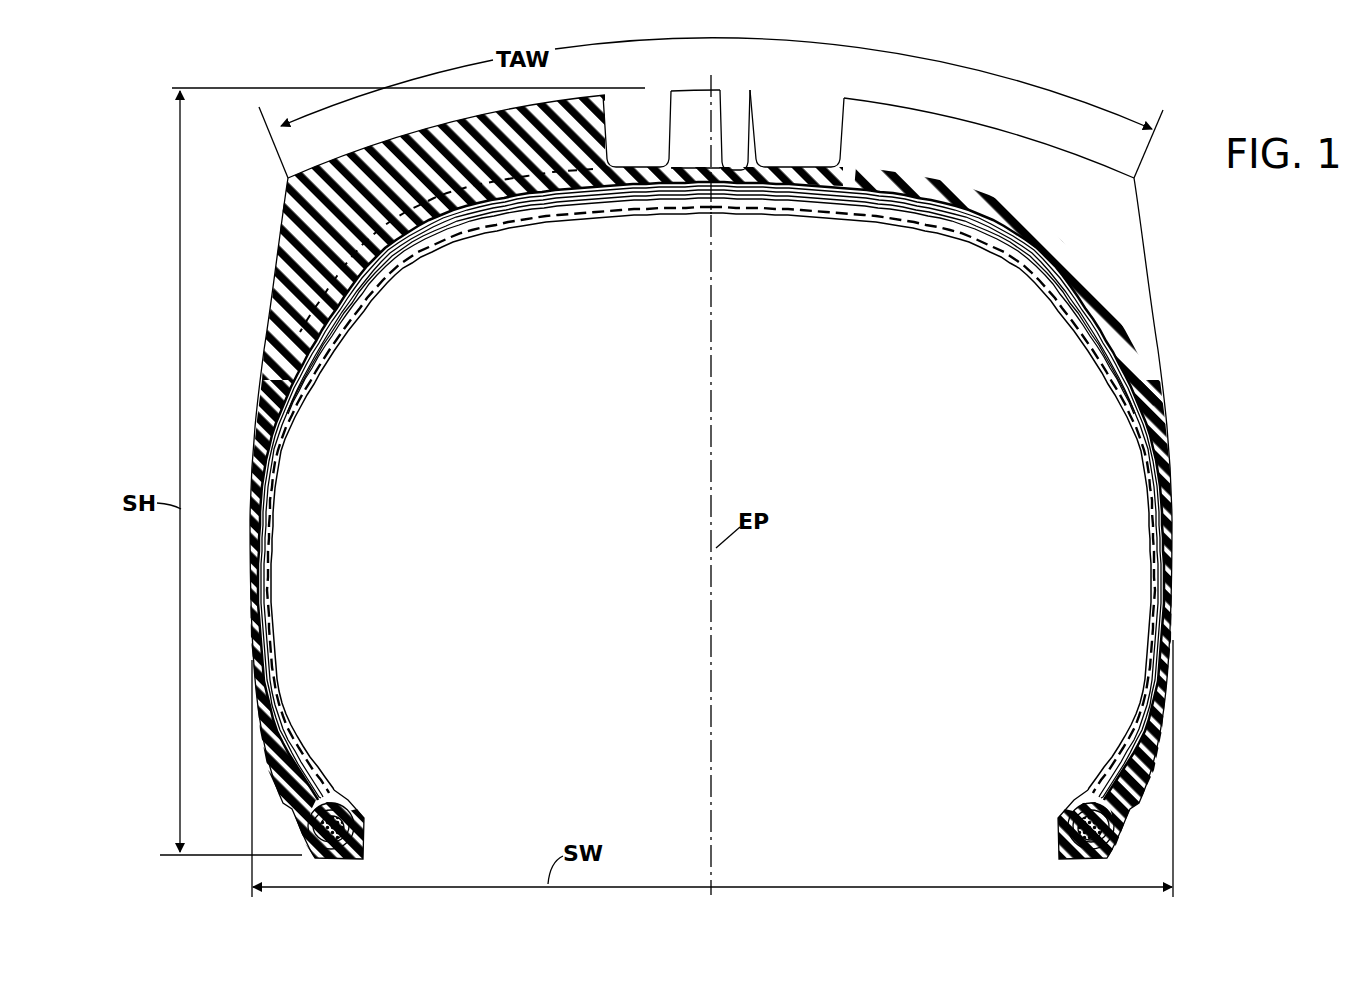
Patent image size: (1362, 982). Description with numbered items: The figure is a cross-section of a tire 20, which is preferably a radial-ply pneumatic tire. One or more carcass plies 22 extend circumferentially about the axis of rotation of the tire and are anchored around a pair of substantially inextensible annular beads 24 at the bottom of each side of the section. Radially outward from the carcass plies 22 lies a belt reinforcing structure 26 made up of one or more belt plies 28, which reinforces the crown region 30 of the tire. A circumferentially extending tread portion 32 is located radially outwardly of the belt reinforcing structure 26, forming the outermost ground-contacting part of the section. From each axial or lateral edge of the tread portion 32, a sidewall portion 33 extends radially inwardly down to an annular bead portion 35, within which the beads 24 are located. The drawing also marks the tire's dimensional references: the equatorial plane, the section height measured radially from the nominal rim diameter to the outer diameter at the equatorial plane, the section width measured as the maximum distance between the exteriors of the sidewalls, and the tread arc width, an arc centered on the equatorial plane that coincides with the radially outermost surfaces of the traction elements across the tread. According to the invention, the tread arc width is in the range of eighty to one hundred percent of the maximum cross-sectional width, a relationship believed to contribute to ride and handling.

The tire 20 is at (1052, 121).
The carcass plies 22 is at (509, 219).
The annular beads 24 is at (360, 832).
The belt reinforcing structure 26 is at (759, 170).
The belt plies 28 is at (577, 195).
The crown region 30 is at (703, 178).
The tread portion 32 is at (827, 107).
The sidewall portion 33 is at (254, 412).
The bead portion 35 is at (348, 800).